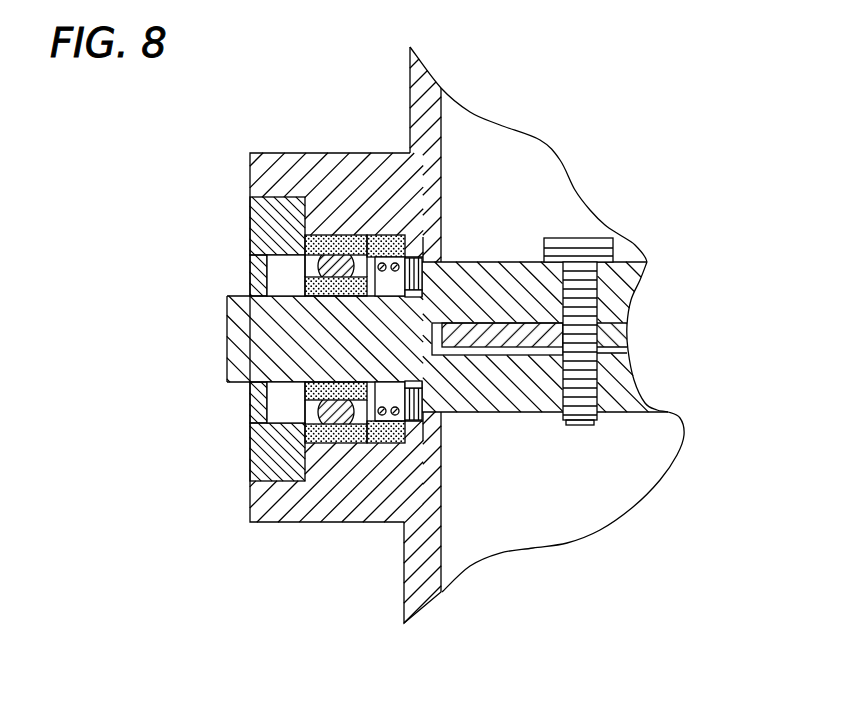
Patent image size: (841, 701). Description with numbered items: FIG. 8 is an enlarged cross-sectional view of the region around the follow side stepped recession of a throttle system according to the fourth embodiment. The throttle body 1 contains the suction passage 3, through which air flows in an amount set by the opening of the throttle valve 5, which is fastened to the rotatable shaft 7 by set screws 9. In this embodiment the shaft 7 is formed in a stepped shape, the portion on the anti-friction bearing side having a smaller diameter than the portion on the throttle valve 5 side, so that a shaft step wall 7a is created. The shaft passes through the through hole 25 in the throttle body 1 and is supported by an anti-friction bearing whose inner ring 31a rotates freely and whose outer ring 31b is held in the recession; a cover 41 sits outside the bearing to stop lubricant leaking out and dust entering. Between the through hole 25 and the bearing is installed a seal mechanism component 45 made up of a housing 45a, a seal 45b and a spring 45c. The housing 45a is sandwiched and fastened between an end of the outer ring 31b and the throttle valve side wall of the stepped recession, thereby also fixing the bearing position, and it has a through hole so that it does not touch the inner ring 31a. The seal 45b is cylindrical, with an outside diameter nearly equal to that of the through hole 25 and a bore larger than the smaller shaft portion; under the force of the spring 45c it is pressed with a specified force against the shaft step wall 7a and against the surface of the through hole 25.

The throttle body 1 is at (302, 503).
The suction passage 3 is at (478, 158).
The throttle valve 5 is at (630, 262).
The shaft 7 is at (684, 435).
The shaft step wall 7a is at (417, 413).
The set screws 9 is at (603, 252).
The through hole 25 is at (425, 257).
The inner ring 31a is at (308, 393).
The outer ring 31b is at (322, 235).
The cover 41 is at (263, 207).
The seal mechanism component 45 is at (335, 178).
The housing 45a is at (358, 235).
The seal 45b is at (392, 235).
The spring 45c is at (376, 413).